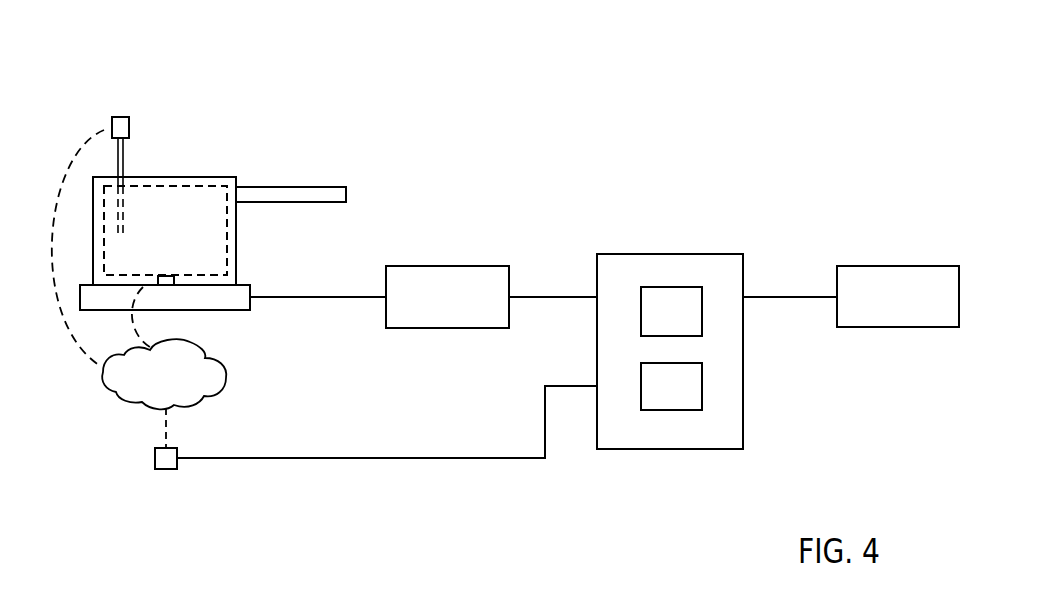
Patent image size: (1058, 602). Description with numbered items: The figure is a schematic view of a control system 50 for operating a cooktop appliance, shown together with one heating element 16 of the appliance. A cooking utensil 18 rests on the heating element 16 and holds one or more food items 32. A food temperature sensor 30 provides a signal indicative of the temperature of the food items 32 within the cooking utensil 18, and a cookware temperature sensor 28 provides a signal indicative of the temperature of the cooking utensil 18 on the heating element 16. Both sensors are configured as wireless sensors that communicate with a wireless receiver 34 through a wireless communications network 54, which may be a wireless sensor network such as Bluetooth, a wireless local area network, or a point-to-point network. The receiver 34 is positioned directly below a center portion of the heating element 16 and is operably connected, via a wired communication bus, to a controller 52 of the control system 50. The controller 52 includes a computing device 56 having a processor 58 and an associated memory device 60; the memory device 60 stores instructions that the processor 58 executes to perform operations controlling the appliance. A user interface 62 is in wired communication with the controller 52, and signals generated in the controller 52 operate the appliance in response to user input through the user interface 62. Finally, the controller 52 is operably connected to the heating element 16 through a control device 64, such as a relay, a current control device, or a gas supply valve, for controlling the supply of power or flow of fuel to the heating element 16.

The heating element 16 is at (242, 292).
The cooking utensil 18 is at (205, 177).
The cookware temperature sensor 28 is at (173, 280).
The food temperature sensor 30 is at (119, 117).
The food items 32 is at (143, 185).
The receiver 34 is at (163, 469).
The control system 50 is at (514, 84).
The controller 52 is at (687, 192).
The wireless communications network 54 is at (135, 393).
The computing device 56 is at (745, 278).
The processor 58 is at (690, 322).
The memory device 60 is at (690, 400).
The user interface 62 is at (875, 267).
The control device 64 is at (438, 272).